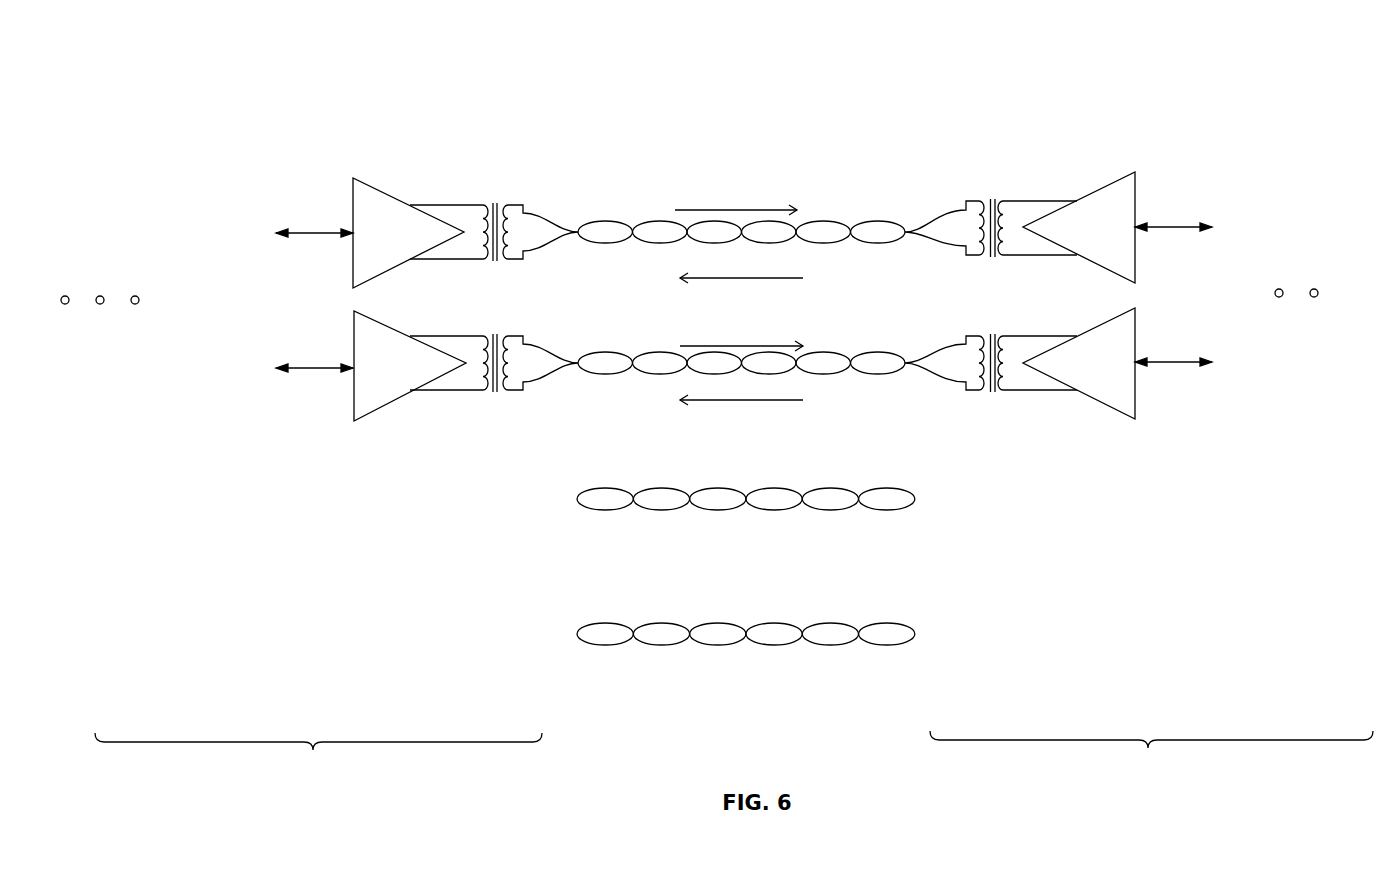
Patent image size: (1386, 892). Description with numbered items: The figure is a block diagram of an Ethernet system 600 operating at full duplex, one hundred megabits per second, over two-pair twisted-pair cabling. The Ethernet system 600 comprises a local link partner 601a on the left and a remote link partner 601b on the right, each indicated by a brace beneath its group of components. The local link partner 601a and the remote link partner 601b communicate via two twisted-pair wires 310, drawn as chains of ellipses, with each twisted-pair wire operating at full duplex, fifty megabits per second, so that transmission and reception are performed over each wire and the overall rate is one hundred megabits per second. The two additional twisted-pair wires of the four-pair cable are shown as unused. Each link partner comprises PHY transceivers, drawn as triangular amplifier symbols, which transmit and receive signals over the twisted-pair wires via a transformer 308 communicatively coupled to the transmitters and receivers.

The Ethernet system 600 is at (410, 71).
The twisted-pair wires 310 is at (630, 208).
The transformer 308 is at (968, 183).
The local link partner 601a is at (477, 742).
The remote link partner 601b is at (1108, 740).